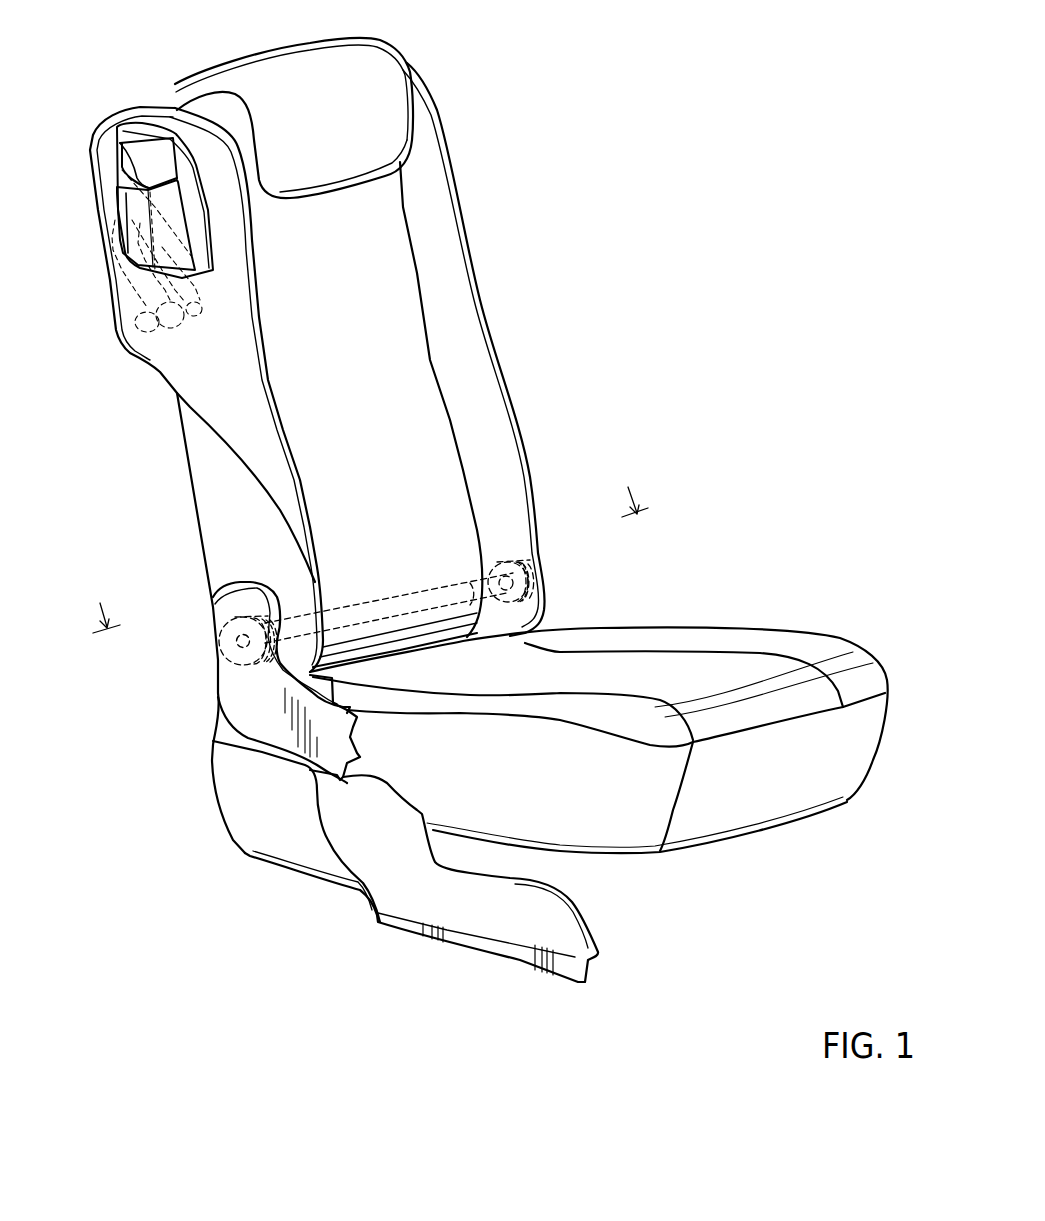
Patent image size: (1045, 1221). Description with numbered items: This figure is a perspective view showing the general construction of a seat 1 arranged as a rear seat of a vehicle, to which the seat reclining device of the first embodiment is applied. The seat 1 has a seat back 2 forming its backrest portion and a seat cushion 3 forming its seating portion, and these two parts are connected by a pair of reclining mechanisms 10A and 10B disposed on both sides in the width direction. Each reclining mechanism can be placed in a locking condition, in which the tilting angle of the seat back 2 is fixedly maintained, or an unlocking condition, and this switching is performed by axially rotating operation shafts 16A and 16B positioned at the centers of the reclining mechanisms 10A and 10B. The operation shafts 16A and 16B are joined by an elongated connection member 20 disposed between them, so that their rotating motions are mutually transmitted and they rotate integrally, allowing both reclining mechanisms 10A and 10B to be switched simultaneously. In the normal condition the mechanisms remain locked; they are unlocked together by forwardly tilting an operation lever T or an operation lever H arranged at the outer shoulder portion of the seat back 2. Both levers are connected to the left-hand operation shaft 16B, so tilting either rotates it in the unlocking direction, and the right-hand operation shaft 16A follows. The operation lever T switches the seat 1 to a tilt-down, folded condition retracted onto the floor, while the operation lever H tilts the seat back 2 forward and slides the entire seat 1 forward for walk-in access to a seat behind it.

The seat 1 is at (467, 510).
The seat back 2 is at (452, 274).
The seat cushion 3 is at (734, 643).
The connection member 20 is at (420, 601).
The operation shaft 16A is at (495, 584).
The operation shaft 16B is at (284, 626).
The reclining mechanism 10A is at (520, 560).
The reclining mechanism 10B is at (223, 634).
The operation lever H is at (130, 160).
The operation lever T is at (140, 206).